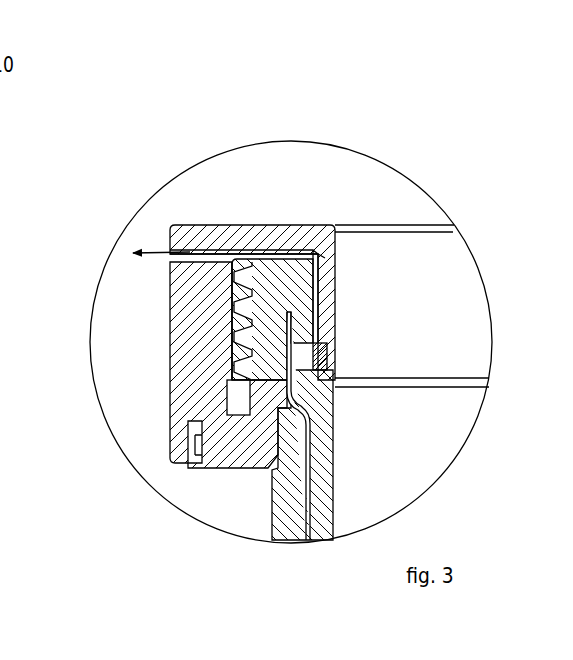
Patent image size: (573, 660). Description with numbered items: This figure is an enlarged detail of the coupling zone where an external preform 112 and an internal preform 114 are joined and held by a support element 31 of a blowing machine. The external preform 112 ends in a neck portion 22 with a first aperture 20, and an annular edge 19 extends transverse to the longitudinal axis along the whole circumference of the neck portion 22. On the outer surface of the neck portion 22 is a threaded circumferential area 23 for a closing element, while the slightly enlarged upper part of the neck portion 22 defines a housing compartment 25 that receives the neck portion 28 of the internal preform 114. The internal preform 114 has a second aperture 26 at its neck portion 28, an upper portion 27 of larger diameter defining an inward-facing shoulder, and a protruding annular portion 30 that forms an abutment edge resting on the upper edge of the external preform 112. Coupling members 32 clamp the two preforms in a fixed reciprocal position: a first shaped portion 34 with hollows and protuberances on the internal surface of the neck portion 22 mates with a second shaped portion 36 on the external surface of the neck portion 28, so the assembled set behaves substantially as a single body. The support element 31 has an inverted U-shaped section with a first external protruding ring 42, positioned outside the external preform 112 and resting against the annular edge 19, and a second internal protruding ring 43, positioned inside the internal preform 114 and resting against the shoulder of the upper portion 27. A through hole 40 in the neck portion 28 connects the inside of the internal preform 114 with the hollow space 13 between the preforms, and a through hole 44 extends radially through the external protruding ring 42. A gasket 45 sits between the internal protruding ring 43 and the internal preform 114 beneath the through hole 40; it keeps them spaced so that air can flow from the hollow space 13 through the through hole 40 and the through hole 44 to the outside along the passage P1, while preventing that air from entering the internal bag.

The hollow space 13 is at (310, 510).
The annular edge 19 is at (225, 453).
The first aperture 20 is at (227, 385).
The neck portion 22 is at (258, 470).
The threaded circumferential area 23 is at (225, 395).
The housing compartment 25 is at (200, 446).
The second aperture 26 is at (312, 280).
The upper portion 27 is at (302, 373).
The neck portion 28 is at (280, 347).
The protruding annular portion 30 is at (262, 267).
The support element 31 is at (268, 222).
The coupling members 32 is at (291, 293).
The first shaped portion 34 is at (286, 293).
The second shaped portion 36 is at (285, 285).
The through hole 40 is at (300, 337).
The first external protruding ring 42 is at (183, 335).
The second internal protruding ring 43 is at (323, 312).
The through hole 44 is at (190, 250).
The gasket 45 is at (329, 357).
The external preform 112 is at (290, 505).
The internal preform 114 is at (325, 522).
The passage P1 is at (160, 253).